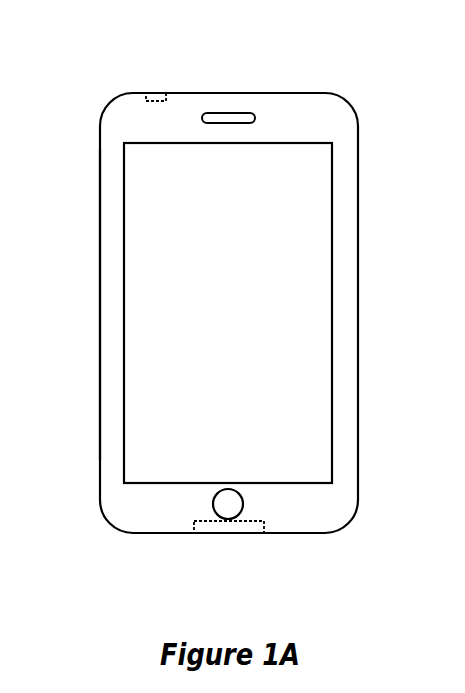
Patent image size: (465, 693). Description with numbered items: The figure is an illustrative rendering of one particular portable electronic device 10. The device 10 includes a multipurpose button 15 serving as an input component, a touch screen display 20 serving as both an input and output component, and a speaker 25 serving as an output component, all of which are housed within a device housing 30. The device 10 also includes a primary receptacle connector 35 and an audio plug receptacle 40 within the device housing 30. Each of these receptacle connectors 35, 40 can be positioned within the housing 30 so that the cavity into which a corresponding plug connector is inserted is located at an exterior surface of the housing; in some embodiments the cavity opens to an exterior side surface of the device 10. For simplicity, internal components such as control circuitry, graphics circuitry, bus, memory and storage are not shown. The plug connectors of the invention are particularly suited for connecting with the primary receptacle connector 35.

The portable electronic device 10 is at (341, 68).
The multipurpose button 15 is at (228, 505).
The touch screen display 20 is at (167, 372).
The speaker 25 is at (215, 112).
The device housing 30 is at (99, 220).
The primary receptacle connector 35 is at (248, 533).
The audio plug receptacle 40 is at (152, 92).